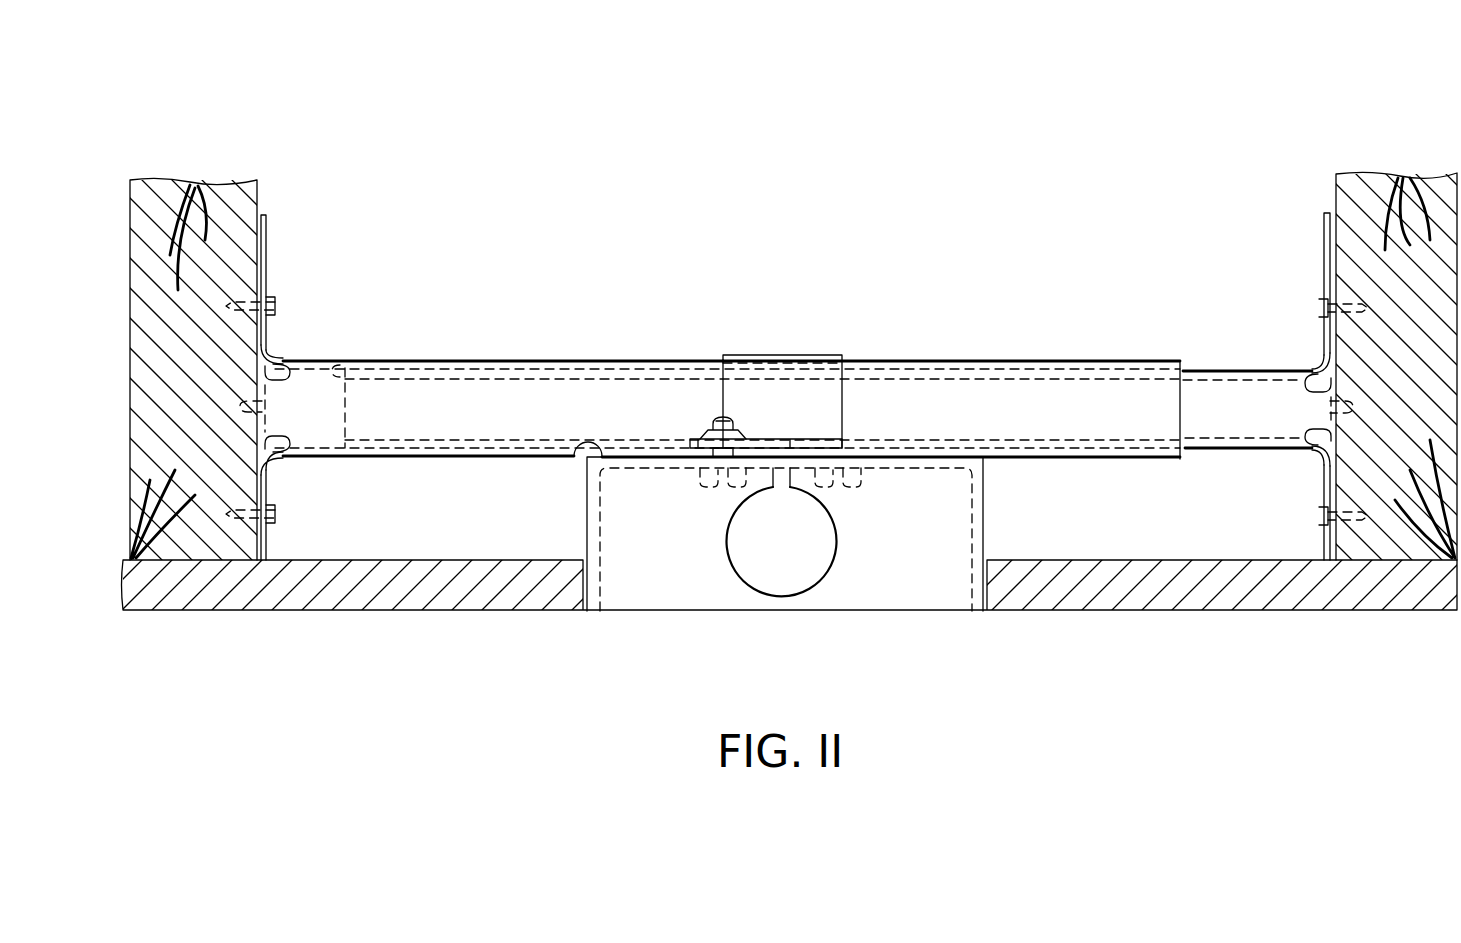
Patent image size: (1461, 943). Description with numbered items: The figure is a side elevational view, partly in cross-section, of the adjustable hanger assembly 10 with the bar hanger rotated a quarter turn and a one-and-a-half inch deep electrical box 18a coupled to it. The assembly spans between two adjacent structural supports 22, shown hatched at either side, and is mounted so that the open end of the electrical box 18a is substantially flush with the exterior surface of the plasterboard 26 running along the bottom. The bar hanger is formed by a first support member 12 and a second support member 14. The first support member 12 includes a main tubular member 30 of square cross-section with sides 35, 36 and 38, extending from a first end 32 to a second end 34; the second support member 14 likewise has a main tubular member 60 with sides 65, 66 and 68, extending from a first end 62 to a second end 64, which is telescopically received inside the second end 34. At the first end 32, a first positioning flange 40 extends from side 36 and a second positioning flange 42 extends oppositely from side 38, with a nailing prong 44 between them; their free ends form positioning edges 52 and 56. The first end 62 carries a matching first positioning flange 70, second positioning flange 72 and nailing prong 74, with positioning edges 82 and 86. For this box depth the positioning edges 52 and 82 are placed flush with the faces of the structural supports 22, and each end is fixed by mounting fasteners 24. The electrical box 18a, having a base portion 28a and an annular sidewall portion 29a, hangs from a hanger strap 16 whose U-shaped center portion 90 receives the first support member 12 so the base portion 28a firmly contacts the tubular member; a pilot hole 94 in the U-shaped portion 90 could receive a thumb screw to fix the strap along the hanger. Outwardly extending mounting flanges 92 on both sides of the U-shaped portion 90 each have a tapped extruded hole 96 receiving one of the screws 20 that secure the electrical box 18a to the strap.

The adjustable hanger assembly 10 is at (1043, 253).
The first support member 12 is at (483, 360).
The second support member 14 is at (1237, 369).
The hanger strap 16 is at (810, 356).
The electrical box 18a is at (958, 612).
The screws 20 is at (722, 487).
The structural supports 22 is at (262, 180).
The mounting fasteners 24 is at (276, 305).
The plasterboard 26 is at (405, 610).
The base portion 28a is at (577, 457).
The annular sidewall portion 29a is at (965, 572).
The main tubular member 30 is at (620, 360).
The first end 32 is at (279, 359).
The second end 34 is at (1190, 368).
The side 35 is at (483, 424).
The side 36 is at (440, 458).
The side 38 is at (447, 360).
The first positioning flange 40 is at (268, 540).
The second positioning flange 42 is at (268, 245).
The nailing prong 44 is at (263, 405).
The positioning edge 52 is at (262, 560).
The positioning edge 56 is at (262, 215).
The main tubular member 60 is at (528, 368).
The first end 62 is at (1321, 454).
The second end 64 is at (342, 365).
The side 65 is at (1190, 424).
The side 66 is at (1195, 452).
The side 68 is at (1205, 370).
The first positioning flange 70 is at (1326, 493).
The second positioning flange 72 is at (1318, 370).
The nailing prong 74 is at (1332, 405).
The positioning edge 82 is at (1327, 560).
The positioning edge 86 is at (1326, 213).
The U-shaped center portion 90 is at (842, 355).
The mounting flanges 92 is at (808, 439).
The pilot hole 94 is at (778, 358).
The extruded hole 96 is at (733, 428).